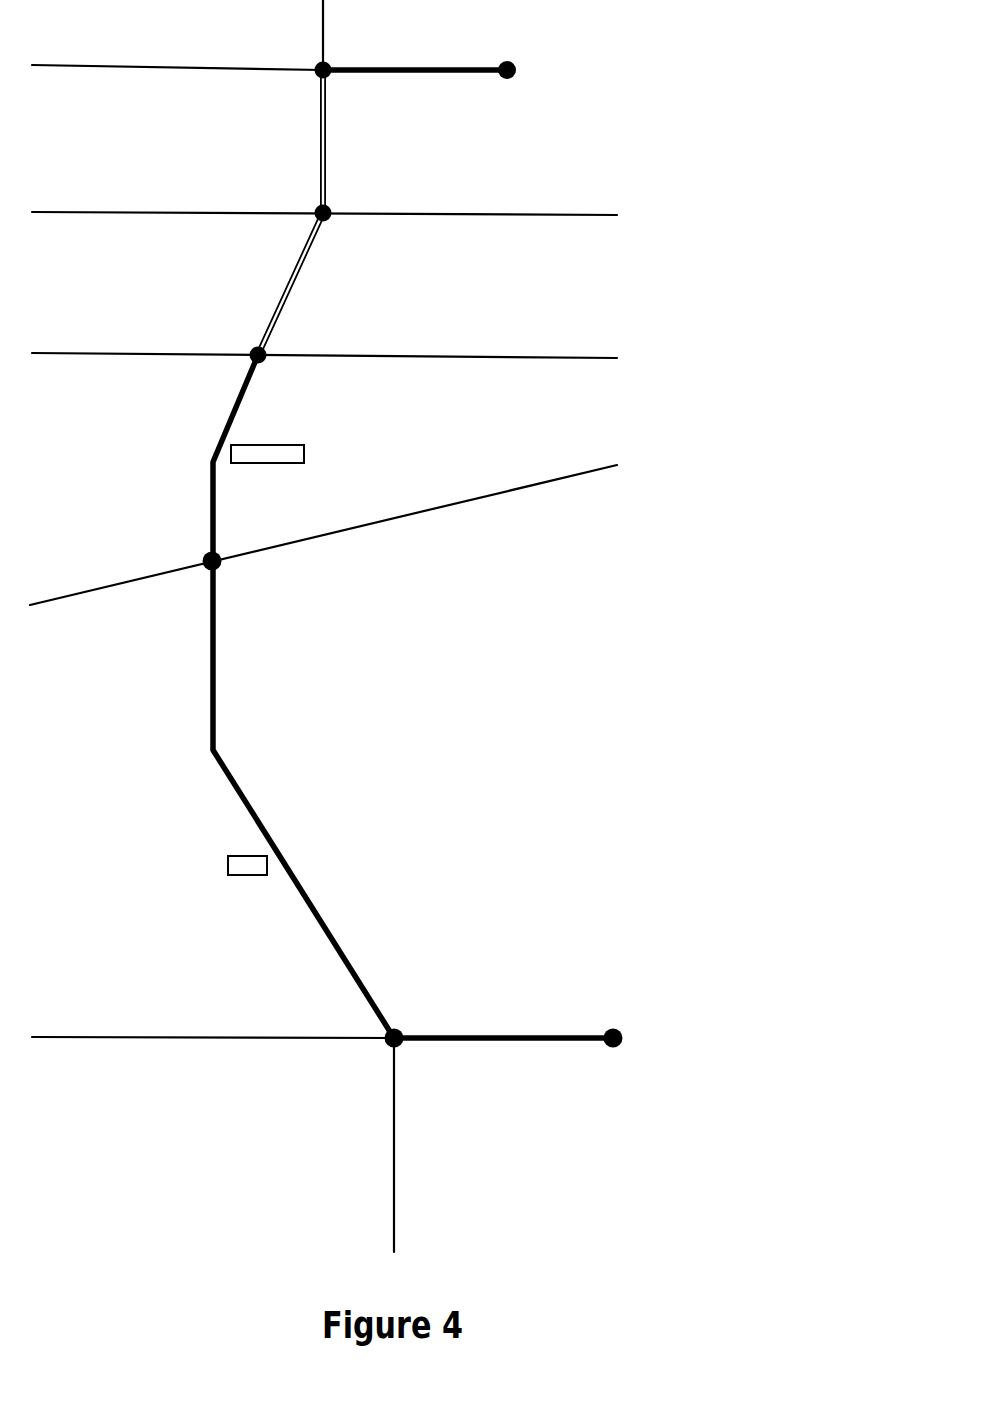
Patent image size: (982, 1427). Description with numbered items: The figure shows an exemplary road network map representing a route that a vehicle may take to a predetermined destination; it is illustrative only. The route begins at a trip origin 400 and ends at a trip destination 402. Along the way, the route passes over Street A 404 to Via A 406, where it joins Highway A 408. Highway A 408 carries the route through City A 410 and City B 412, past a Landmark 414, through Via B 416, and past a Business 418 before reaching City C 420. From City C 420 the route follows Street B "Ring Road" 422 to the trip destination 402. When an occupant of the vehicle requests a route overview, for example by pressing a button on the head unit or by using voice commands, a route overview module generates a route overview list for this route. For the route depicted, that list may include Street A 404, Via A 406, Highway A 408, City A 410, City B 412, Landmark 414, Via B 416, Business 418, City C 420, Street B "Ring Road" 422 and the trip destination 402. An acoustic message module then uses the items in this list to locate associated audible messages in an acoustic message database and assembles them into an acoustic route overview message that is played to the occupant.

The trip origin 400 is at (511, 62).
The trip destination 402 is at (619, 1031).
The Street A 404 is at (400, 68).
The Via A 406 is at (314, 76).
The Highway A 408 is at (326, 133).
The City A 410 is at (331, 221).
The City B 412 is at (268, 350).
The Landmark 414 is at (306, 443).
The Via B 416 is at (220, 568).
The Business 418 is at (228, 854).
The City C 420 is at (385, 1031).
The Street B "Ring Road" 422 is at (482, 1042).